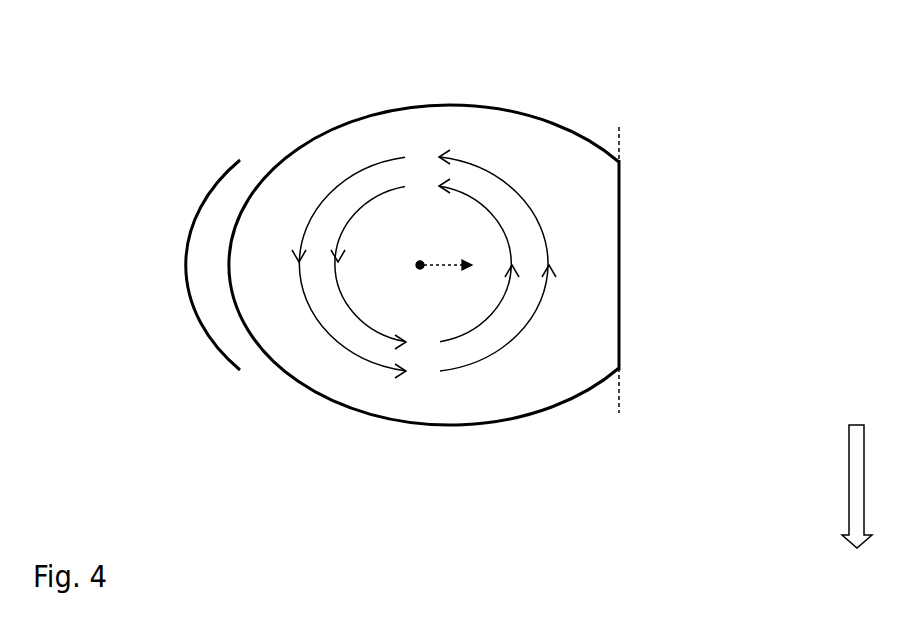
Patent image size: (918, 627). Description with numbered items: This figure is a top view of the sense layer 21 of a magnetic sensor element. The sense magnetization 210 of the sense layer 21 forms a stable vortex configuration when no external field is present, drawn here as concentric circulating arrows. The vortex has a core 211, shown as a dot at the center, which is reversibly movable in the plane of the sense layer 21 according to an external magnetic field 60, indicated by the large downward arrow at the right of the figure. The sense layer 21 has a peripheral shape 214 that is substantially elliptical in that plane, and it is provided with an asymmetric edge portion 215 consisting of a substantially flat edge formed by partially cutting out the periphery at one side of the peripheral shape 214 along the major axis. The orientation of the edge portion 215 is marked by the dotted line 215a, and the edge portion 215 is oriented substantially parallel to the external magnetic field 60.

The sense layer 21 is at (542, 100).
The sense magnetization 210 is at (312, 207).
The core 211 is at (420, 268).
The peripheral shape 214 is at (252, 337).
The edge portion 215 is at (619, 258).
The dotted line 215a is at (618, 137).
The external magnetic field 60 is at (841, 486).